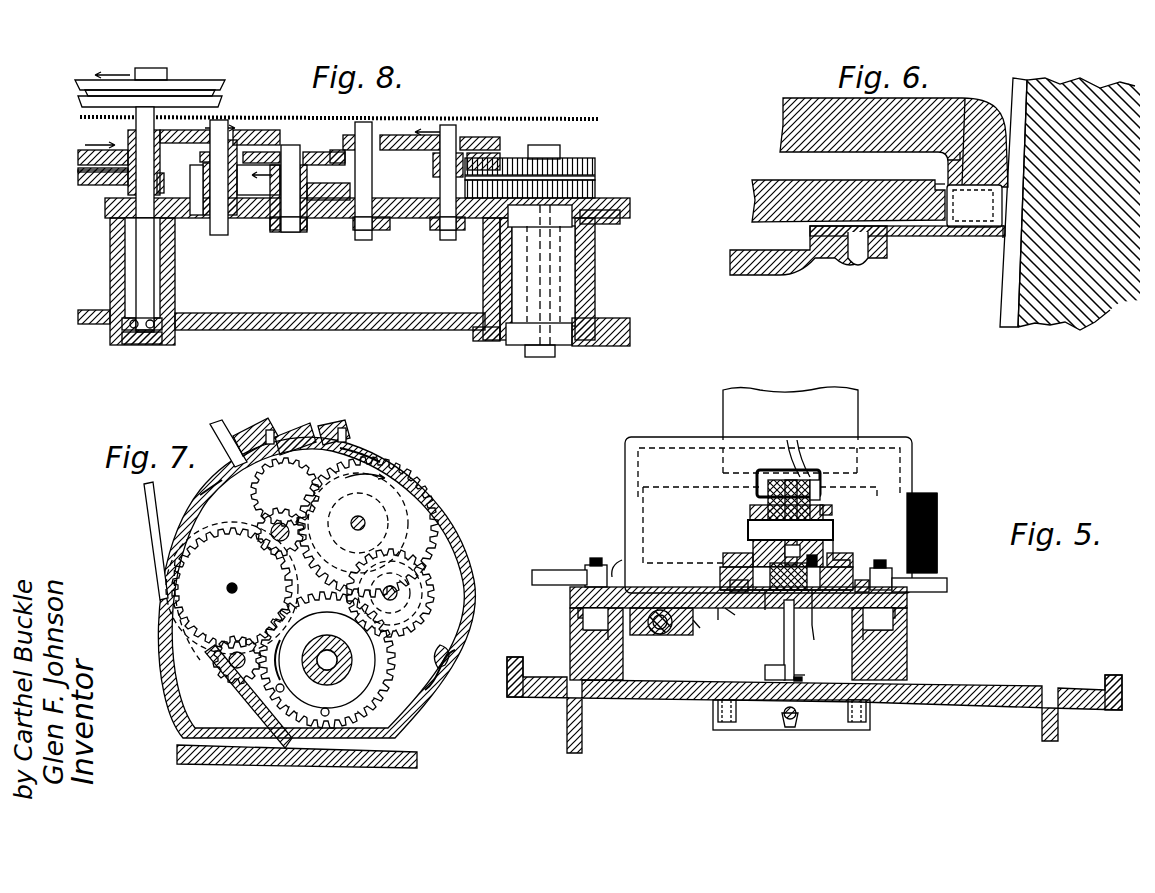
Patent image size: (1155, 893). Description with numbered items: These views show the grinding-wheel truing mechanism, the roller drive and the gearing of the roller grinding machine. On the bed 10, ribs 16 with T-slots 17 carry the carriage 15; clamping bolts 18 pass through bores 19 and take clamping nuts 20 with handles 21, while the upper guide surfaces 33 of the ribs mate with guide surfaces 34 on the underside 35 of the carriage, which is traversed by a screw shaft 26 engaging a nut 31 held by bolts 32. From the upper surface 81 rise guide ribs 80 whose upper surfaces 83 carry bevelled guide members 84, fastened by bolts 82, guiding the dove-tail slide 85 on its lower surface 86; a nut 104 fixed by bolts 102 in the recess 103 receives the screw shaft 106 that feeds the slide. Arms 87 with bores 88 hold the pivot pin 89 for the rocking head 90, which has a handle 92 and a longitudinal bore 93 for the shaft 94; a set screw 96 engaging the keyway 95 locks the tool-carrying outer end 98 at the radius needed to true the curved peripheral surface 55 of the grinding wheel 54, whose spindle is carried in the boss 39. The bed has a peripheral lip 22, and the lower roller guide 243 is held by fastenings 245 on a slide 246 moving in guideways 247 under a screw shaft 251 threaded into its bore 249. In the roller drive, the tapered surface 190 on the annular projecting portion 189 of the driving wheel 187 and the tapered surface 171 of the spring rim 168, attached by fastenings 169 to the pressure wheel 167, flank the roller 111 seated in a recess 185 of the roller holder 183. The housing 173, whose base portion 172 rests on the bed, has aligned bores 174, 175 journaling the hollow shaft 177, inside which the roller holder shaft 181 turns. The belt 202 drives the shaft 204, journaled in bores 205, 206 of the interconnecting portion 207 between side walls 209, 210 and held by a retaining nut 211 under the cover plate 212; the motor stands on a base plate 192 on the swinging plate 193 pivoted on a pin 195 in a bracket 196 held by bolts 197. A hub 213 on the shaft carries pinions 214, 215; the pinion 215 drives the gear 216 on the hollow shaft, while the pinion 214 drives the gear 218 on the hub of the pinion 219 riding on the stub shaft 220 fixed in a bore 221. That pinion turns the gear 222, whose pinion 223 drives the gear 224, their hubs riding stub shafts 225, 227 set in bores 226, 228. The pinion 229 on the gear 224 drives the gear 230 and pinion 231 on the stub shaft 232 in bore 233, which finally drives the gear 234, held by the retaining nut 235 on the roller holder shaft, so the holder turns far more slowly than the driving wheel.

In FIG. 8, the side wall 209 is at (190, 100).
In FIG. 8, the gear 218 is at (262, 130).
In FIG. 7, the gear 218 is at (175, 645).
In FIG. 8, the pinion 229 is at (352, 134).
In FIG. 7, the pinion 229 is at (372, 490).
In FIG. 8, the gear 230 is at (415, 134).
In FIG. 7, the gear 230 is at (440, 560).
In FIG. 8, the gear 222 is at (315, 152).
In FIG. 7, the gear 222 is at (205, 492).
In FIG. 8, the pinion 214 is at (128, 133).
In FIG. 8, the pinion 219 is at (200, 156).
In FIG. 7, the pinion 219 is at (166, 590).
In FIG. 8, the hub 213 is at (162, 164).
In FIG. 8, the pinion 215 is at (165, 184).
In FIG. 7, the pinion 215 is at (215, 690).
In FIG. 8, the gear 234 is at (78, 158).
In FIG. 7, the gear 234 is at (455, 672).
In FIG. 8, the gear 216 is at (78, 178).
In FIG. 7, the gear 216 is at (400, 718).
In FIG. 8, the retaining nut 235 is at (552, 148).
In FIG. 8, the pinion 223 is at (262, 182).
In FIG. 7, the pinion 223 is at (262, 478).
In FIG. 8, the gear 224 is at (312, 182).
In FIG. 7, the gear 224 is at (385, 460).
In FIG. 8, the pinion 231 is at (433, 163).
In FIG. 7, the pinion 231 is at (434, 580).
In FIG. 8, the bore 205 is at (112, 215).
In FIG. 8, the shaft 204 is at (136, 272).
In FIG. 7, the shaft 204 is at (225, 690).
In FIG. 8, the shaft 221 is at (212, 218).
In FIG. 8, the stub shaft 225 is at (296, 230).
In FIG. 7, the stub shaft 225 is at (290, 522).
In FIG. 8, the stub shaft 227 is at (364, 240).
In FIG. 7, the stub shaft 227 is at (360, 516).
In FIG. 8, the stub shaft 232 is at (448, 240).
In FIG. 7, the stub shaft 232 is at (440, 600).
In FIG. 8, the stub shaft 220 is at (214, 225).
In FIG. 7, the stub shaft 220 is at (230, 596).
In FIG. 8, the bore 226 is at (280, 232).
In FIG. 8, the bore 228 is at (358, 230).
In FIG. 8, the bore 233 is at (435, 230).
In FIG. 8, the interconnecting portion 207 is at (175, 270).
In FIG. 8, the bore 206 is at (100, 310).
In FIG. 8, the retaining nut 211 is at (122, 324).
In FIG. 8, the cover plate 212 is at (125, 345).
In FIG. 8, the side wall 210 is at (272, 313).
In FIG. 8, the housing 173 is at (258, 330).
In FIG. 7, the housing 173 is at (415, 460).
In FIG. 8, the hollow shaft 177 is at (570, 277).
In FIG. 7, the hollow shaft 177 is at (338, 700).
In FIG. 8, the roller holder shaft 181 is at (560, 298).
In FIG. 7, the roller holder shaft 181 is at (337, 661).
In FIG. 8, the bore 174 is at (595, 230).
In FIG. 8, the bore 175 is at (600, 346).
In FIG. 6, the driving wheel 187 is at (783, 122).
In FIG. 6, the lateral tapered surface 190 is at (963, 115).
In FIG. 6, the lateral annular projecting portion 189 is at (944, 160).
In FIG. 6, the roller holder 183 is at (790, 180).
In FIG. 6, the recesses 185 is at (935, 182).
In FIG. 6, the roller 111 is at (974, 206).
In FIG. 6, the spring rim 168 is at (912, 238).
In FIG. 6, the tapered lateral annular surface 171 is at (970, 238).
In FIG. 6, the pressure wheel 167 is at (770, 276).
In FIG. 6, the securing means 169 is at (855, 265).
In FIG. 6, the peripheral surface 55 is at (1002, 298).
In FIG. 5, the peripheral surface 55 is at (938, 525).
In FIG. 6, the grinding wheel 54 is at (1048, 320).
In FIG. 5, the grinding wheel 54 is at (920, 493).
In FIG. 7, the base portion 172 is at (417, 762).
In FIG. 7, the endless belt 202 is at (226, 456).
In FIG. 7, the base plate 192 is at (262, 420).
In FIG. 7, the swinging plate 193 is at (270, 430).
In FIG. 7, the pivot pin 195 is at (292, 432).
In FIG. 7, the bolts 197 is at (335, 425).
In FIG. 7, the bracket 196 is at (350, 432).
In FIG. 5, the hollow cylindrical boss 39 is at (858, 412).
In FIG. 5, the set screw 96 is at (625, 482).
In FIG. 5, the outer end 98 is at (668, 448).
In FIG. 5, the longitudinal keyway 95 is at (805, 450).
In FIG. 5, the rocking head 90 is at (788, 445).
In FIG. 5, the longitudinal bore 93 is at (812, 470).
In FIG. 5, the shaft 94 is at (768, 498).
In FIG. 5, the upstanding arms 87 is at (822, 492).
In FIG. 5, the upper surface 81 is at (752, 512).
In FIG. 5, the transverse bores 88 is at (832, 508).
In FIG. 5, the pivot pin 89 is at (835, 525).
In FIG. 5, the bolts 102 is at (790, 530).
In FIG. 5, the bolts 82 is at (753, 548).
In FIG. 5, the lower surface 86 is at (823, 548).
In FIG. 5, the handle 92 is at (840, 556).
In FIG. 5, the guide members 84 is at (723, 558).
In FIG. 5, the upper surfaces 83 is at (722, 575).
In FIG. 5, the guide ribs 80 is at (720, 584).
In FIG. 5, the carriage 15 is at (612, 572).
In FIG. 5, the clamping nuts 20 is at (594, 565).
In FIG. 5, the handles 21 is at (953, 574).
In FIG. 5, the bores 19 is at (570, 590).
In FIG. 5, the guide surfaces 34 is at (578, 605).
In FIG. 5, the upper guide surfaces 33 is at (590, 614).
In FIG. 5, the clamping bolts 18 is at (585, 626).
In FIG. 5, the T-slots 17 is at (600, 638).
In FIG. 5, the ribs 16 is at (580, 656).
In FIG. 5, the nut 31 is at (652, 636).
In FIG. 5, the screw shaft 26 is at (662, 636).
In FIG. 5, the bolts 32 is at (698, 630).
In FIG. 5, the dove-tail slide 85 is at (740, 620).
In FIG. 5, the underside 35 is at (722, 612).
In FIG. 5, the recess 103 is at (765, 612).
In FIG. 5, the nut 104 is at (820, 616).
In FIG. 5, the screw shaft 106 is at (795, 640).
In FIG. 5, the slide 246 is at (765, 672).
In FIG. 5, the lower roller guide 243 is at (810, 668).
In FIG. 5, the securing means 245 is at (813, 678).
In FIG. 5, the guideways 247 is at (740, 722).
In FIG. 5, the threaded bore 249 is at (784, 720).
In FIG. 5, the screw shaft 251 is at (795, 730).
In FIG. 5, the bed 10 is at (975, 708).
In FIG. 5, the peripheral lip 22 is at (513, 657).